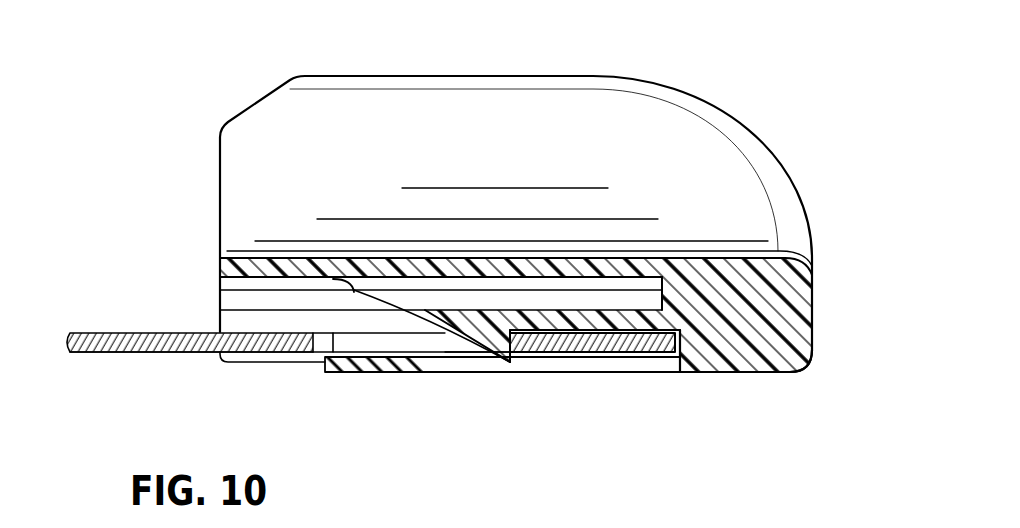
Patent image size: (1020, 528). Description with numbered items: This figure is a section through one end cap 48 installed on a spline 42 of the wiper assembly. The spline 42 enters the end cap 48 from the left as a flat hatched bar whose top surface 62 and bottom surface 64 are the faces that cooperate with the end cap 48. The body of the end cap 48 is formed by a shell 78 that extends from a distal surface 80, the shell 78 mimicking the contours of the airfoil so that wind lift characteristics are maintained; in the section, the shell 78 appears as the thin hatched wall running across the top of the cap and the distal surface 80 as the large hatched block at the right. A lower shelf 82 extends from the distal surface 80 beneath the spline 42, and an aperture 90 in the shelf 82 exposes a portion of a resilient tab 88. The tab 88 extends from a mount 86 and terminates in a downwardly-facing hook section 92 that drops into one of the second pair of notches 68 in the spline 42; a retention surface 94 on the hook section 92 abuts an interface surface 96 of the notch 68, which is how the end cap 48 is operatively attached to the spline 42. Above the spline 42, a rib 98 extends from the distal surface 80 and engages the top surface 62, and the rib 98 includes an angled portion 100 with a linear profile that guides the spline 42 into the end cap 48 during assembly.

The spline 42 is at (183, 339).
The end cap 48 is at (756, 140).
The top surface 62 is at (103, 333).
The bottom surface 64 is at (135, 355).
The second pair of notches 68 is at (341, 342).
The shell 78 is at (232, 268).
The distal surface 80 is at (645, 354).
The lower shelf 82 is at (398, 373).
The mount 86 is at (722, 362).
The resilient tab 88 is at (605, 330).
The aperture 90 is at (462, 365).
The hook section 92 is at (438, 340).
The retention surface 94 is at (510, 364).
The interface surface 96 is at (495, 355).
The rib 98 is at (359, 360).
The angled portion 100 is at (352, 290).